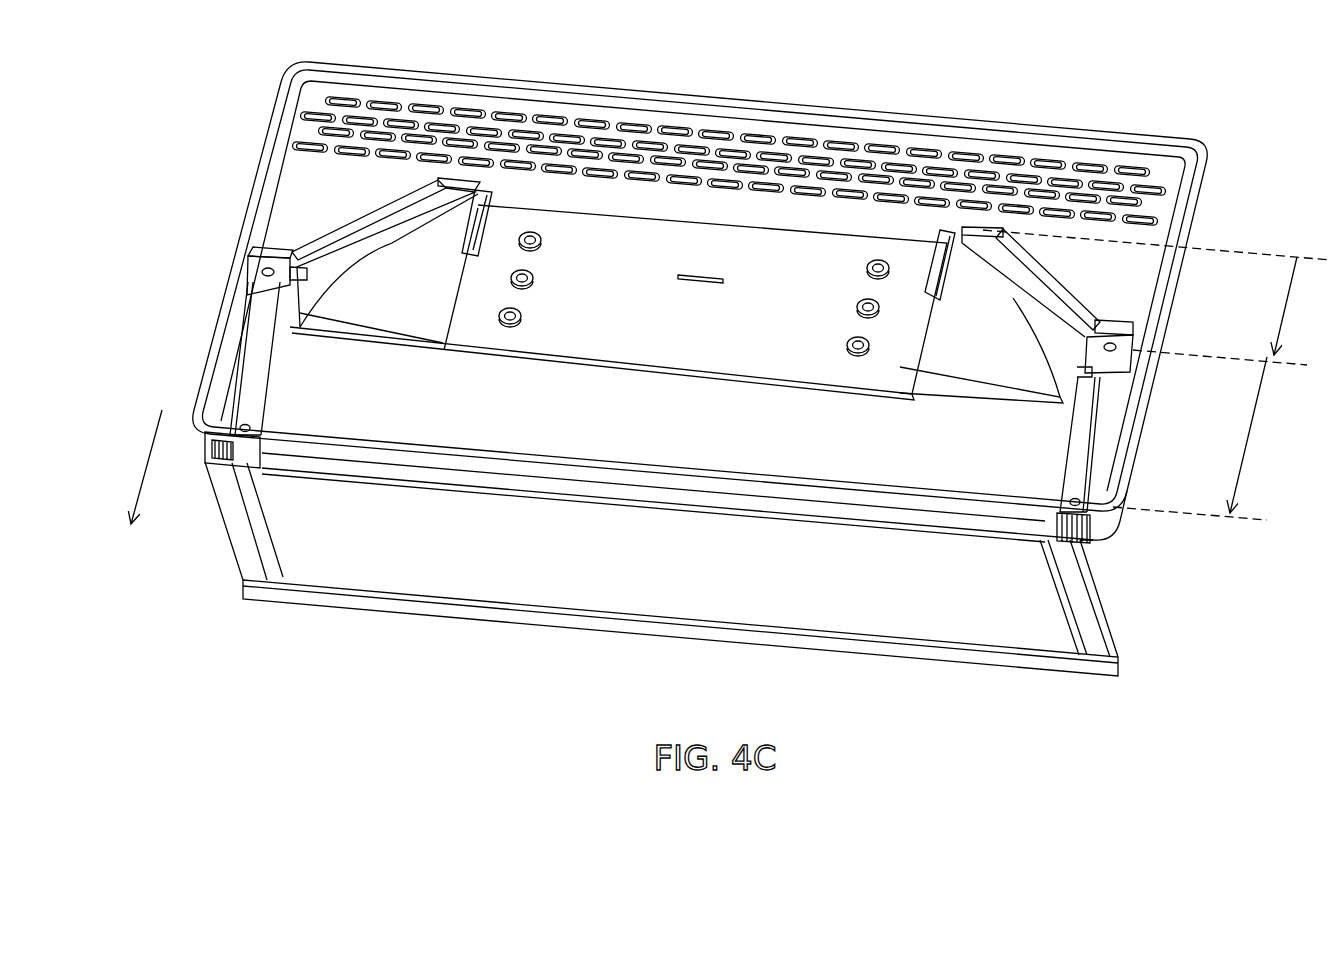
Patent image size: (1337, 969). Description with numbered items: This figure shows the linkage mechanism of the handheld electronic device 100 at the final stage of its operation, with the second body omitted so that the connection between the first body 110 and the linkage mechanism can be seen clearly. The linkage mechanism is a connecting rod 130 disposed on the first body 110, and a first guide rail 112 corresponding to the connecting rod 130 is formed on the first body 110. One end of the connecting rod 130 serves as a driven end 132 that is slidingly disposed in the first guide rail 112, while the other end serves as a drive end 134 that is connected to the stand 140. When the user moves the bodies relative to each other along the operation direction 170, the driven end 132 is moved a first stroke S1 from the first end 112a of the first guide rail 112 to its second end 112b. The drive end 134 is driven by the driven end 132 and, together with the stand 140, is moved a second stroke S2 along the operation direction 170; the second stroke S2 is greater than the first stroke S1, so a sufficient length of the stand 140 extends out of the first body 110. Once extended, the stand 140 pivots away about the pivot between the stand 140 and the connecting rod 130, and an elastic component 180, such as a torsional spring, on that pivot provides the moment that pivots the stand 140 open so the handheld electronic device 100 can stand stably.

The handheld electronic device 100 is at (1247, 730).
The first body 110 is at (1193, 214).
The first guide rail 112 is at (1034, 257).
The first end of the first guide rail 112a is at (988, 238).
The second end of the first guide rail 112b is at (1137, 343).
The connecting rod 130 is at (1090, 435).
The driven end 132 is at (1110, 343).
The drive end 134 is at (1087, 547).
The stand 140 is at (847, 648).
The operation direction 170 is at (142, 470).
The elastic component 180 is at (1087, 533).
The first stroke S1 is at (1156, 297).
The second stroke S2 is at (1200, 438).